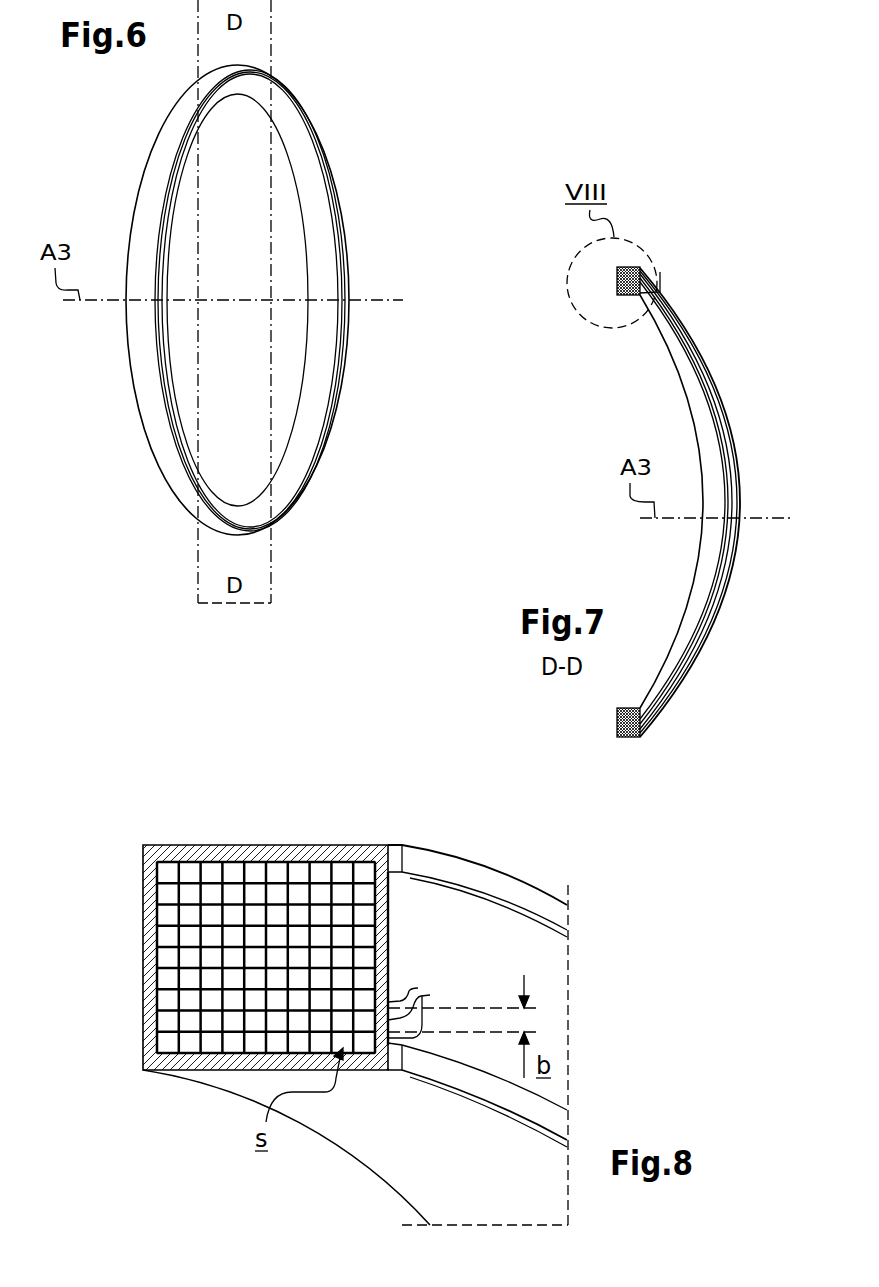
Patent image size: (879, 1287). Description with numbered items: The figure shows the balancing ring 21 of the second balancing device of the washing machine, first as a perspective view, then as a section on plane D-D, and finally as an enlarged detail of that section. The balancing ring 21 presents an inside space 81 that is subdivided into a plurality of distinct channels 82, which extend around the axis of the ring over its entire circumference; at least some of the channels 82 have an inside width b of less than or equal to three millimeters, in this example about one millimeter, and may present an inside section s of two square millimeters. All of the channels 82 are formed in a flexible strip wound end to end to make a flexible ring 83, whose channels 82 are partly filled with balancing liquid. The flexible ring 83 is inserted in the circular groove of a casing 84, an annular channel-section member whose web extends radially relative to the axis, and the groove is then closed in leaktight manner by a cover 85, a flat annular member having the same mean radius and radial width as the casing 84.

In FIG. 6, the balancing ring 21 is at (327, 97).
In FIG. 7, the balancing ring 21 is at (695, 268).
In FIG. 8, the balancing ring 21 is at (392, 820).
In FIG. 8, the inside space 81 is at (168, 864).
In FIG. 8, the channels 82 is at (418, 988).
In FIG. 8, the flexible ring 83 is at (323, 858).
In FIG. 6, the casing 84 is at (139, 412).
In FIG. 7, the casing 84 is at (690, 610).
In FIG. 8, the casing 84 is at (212, 845).
In FIG. 6, the cover 85 is at (303, 480).
In FIG. 7, the cover 85 is at (683, 695).
In FIG. 8, the cover 85 is at (383, 937).